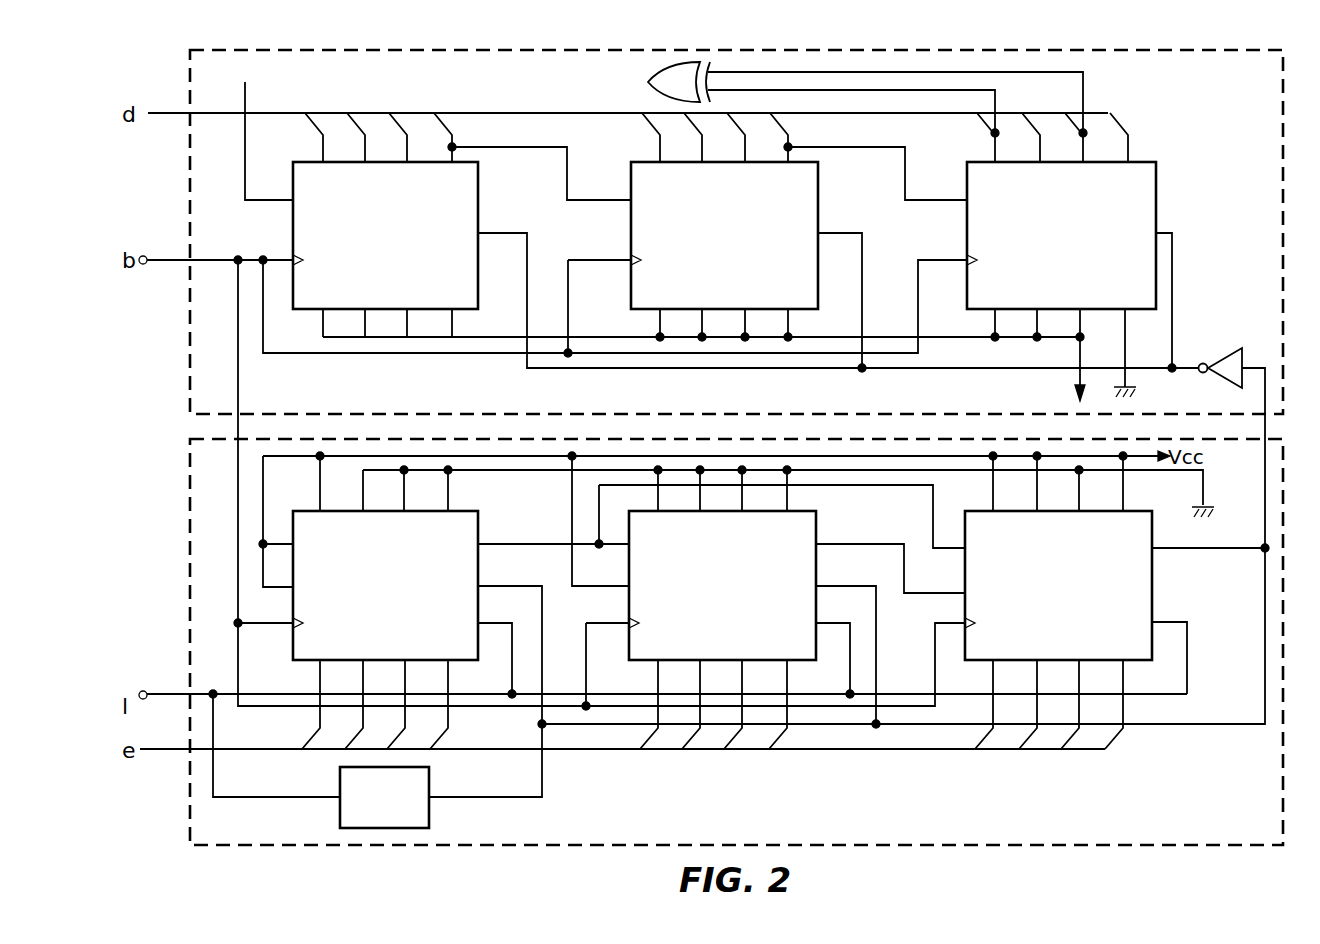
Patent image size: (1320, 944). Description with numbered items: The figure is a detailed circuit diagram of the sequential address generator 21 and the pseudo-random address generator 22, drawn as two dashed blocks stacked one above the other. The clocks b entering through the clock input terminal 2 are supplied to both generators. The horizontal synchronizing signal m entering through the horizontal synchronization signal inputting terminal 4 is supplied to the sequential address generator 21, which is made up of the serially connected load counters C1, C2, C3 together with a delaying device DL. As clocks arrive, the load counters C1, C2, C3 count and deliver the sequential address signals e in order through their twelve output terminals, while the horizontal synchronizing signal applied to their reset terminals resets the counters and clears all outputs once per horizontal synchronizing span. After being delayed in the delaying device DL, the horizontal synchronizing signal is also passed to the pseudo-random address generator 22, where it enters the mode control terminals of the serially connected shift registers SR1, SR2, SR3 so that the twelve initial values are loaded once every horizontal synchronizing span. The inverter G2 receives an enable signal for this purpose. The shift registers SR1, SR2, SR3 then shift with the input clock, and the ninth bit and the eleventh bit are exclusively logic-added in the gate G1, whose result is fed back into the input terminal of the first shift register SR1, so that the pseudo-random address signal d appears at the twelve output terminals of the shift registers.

The clock input terminal 2 is at (143, 256).
The horizontal synchronization signal inputting terminal 4 is at (143, 691).
The sequential address generator 21 is at (190, 520).
The pseudo-random address generator 22 is at (190, 382).
The shift register SR1 is at (478, 203).
The shift register SR2 is at (818, 203).
The shift register SR3 is at (1156, 203).
The gate G1 is at (660, 68).
The inverter G2 is at (1224, 348).
The load counter C1 is at (478, 520).
The load counter C2 is at (816, 522).
The load counter C3 is at (1152, 583).
The delaying device DL is at (429, 812).